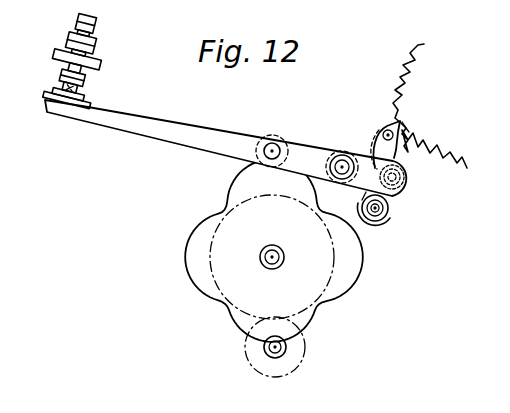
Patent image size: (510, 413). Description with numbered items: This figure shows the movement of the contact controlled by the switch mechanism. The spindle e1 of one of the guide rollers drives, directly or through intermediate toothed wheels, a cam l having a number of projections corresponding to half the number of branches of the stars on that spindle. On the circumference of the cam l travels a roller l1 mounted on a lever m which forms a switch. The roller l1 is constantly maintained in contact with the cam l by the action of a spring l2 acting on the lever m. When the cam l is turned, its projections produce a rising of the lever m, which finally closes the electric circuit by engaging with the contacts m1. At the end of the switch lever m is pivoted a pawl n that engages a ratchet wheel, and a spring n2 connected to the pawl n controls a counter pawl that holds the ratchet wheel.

The cam l is at (199, 227).
The roller l1 is at (287, 137).
The spring l2 is at (374, 223).
The lever m is at (180, 126).
The contacts m1 is at (78, 89).
The pawl n is at (382, 134).
The spring n2 is at (412, 157).
The spindle e1 is at (266, 348).